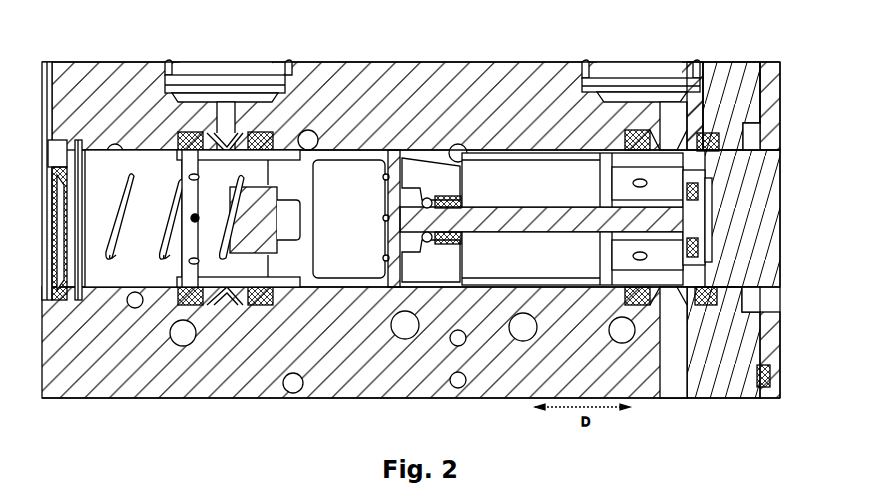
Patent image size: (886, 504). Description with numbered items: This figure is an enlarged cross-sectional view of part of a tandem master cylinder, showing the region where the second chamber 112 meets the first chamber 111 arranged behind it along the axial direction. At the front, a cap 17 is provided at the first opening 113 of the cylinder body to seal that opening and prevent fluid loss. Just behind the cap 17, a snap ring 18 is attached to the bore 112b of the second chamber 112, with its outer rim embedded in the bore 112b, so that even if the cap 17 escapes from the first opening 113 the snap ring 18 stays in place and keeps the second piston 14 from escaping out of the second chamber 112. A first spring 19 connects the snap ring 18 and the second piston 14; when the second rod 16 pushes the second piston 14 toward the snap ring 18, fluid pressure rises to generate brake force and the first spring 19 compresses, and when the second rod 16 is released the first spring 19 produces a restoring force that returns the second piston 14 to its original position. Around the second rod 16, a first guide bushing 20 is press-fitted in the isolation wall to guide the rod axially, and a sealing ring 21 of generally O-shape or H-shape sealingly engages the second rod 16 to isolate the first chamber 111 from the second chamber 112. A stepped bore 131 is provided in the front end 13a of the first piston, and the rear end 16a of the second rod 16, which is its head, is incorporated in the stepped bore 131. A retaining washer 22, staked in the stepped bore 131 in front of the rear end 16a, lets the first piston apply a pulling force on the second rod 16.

The cap 17 is at (60, 138).
The snap ring 18 is at (79, 138).
The bore 112b is at (97, 140).
The first spring 19 is at (128, 178).
The second piston 14 is at (297, 176).
The second chamber 112 is at (351, 176).
The sealing ring 21 is at (420, 195).
The first guide bushing 20 is at (445, 194).
The second rod 16 is at (525, 214).
The first chamber 111 is at (566, 176).
The front end 13a is at (694, 172).
The stepped bore 131 is at (718, 152).
The rear end 16a is at (710, 220).
The retaining washer 22 is at (700, 303).
The first opening 113 is at (42, 215).